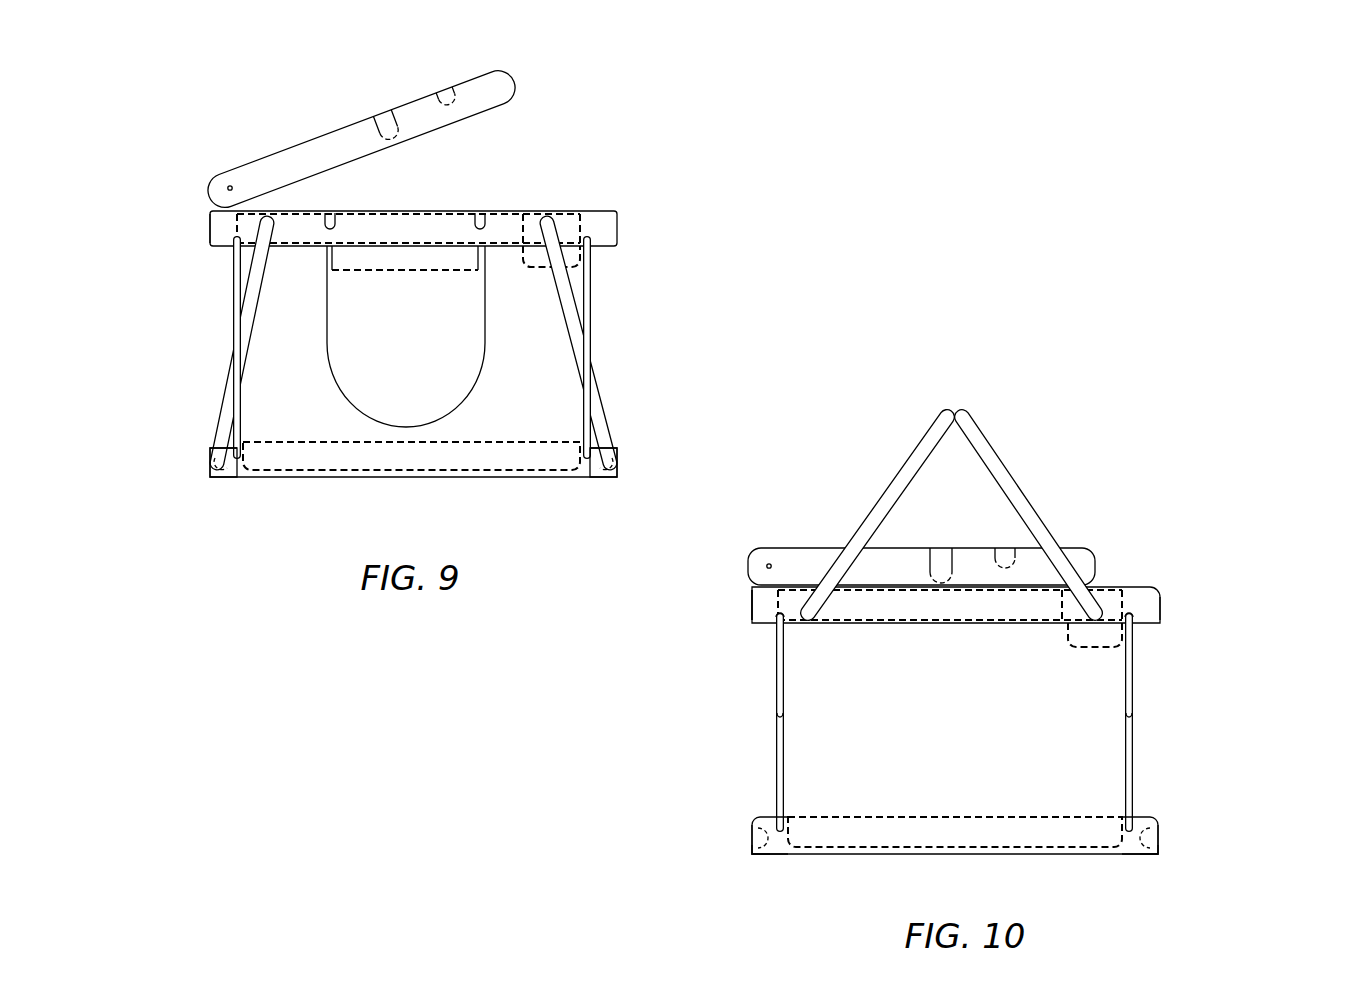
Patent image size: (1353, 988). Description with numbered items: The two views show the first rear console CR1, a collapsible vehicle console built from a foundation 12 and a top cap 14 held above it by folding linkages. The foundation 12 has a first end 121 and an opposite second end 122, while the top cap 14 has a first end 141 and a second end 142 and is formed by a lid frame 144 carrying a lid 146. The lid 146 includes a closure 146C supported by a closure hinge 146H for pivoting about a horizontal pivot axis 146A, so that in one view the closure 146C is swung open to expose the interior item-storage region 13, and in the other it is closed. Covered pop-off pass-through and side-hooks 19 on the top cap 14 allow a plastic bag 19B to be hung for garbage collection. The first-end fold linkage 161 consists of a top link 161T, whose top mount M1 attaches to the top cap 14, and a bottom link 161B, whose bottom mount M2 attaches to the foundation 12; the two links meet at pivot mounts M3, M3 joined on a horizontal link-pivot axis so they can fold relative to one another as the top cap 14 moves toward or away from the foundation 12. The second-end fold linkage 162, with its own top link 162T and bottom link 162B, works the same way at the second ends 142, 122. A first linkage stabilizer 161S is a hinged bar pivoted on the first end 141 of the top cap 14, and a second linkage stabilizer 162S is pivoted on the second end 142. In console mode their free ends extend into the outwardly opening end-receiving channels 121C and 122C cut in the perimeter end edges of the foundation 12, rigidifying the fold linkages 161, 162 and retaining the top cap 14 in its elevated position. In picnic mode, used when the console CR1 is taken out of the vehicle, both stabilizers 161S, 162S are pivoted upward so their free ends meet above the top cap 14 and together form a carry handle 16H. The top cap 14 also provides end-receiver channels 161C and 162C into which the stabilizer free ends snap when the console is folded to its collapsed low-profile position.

In FIG. 9, the foundation 12 is at (261, 481).
In FIG. 10, the foundation 12 is at (792, 862).
In FIG. 9, the interior item-storage region 13 is at (509, 341).
In FIG. 10, the interior item-storage region 13 is at (978, 714).
In FIG. 9, the top cap 14 is at (194, 195).
In FIG. 10, the top cap 14 is at (737, 570).
In FIG. 9, the covered pop-off pass-through and side-hooks 19 is at (334, 204).
In FIG. 9, the plastic bag 19B is at (424, 381).
In FIG. 10, the first end of foundation 121 is at (781, 825).
In FIG. 9, the end-receiving channel 121C is at (219, 478).
In FIG. 10, the end-receiving channel 121C is at (766, 845).
In FIG. 10, the second end of foundation 122 is at (1166, 830).
In FIG. 9, the end-receiving channel 122C is at (606, 478).
In FIG. 10, the end-receiving channel 122C is at (1160, 846).
In FIG. 10, the first end of top cap 141 is at (751, 606).
In FIG. 10, the second end of top cap 142 is at (1161, 587).
In FIG. 9, the lid frame 144 is at (436, 203).
In FIG. 10, the lid frame 144 is at (968, 630).
In FIG. 9, the lid 146 is at (490, 62).
In FIG. 10, the lid 146 is at (913, 529).
In FIG. 9, the horizontal pivot axis 146A is at (228, 186).
In FIG. 10, the horizontal pivot axis 146A is at (768, 563).
In FIG. 9, the closure 146C is at (313, 130).
In FIG. 10, the closure 146C is at (817, 545).
In FIG. 9, the closure hinge 146H is at (203, 210).
In FIG. 10, the closure hinge 146H is at (742, 588).
In FIG. 10, the carry handle 16H is at (1078, 442).
In FIG. 9, the first-end fold linkage 161 is at (129, 331).
In FIG. 10, the first-end fold linkage 161 is at (661, 716).
In FIG. 9, the top link 161T is at (234, 290).
In FIG. 10, the top link 161T is at (779, 680).
In FIG. 9, the bottom link 161B is at (236, 438).
In FIG. 10, the bottom link 161B is at (779, 780).
In FIG. 9, the first linkage stabilizer 161S is at (240, 350).
In FIG. 10, the first linkage stabilizer 161S is at (870, 498).
In FIG. 10, the end-receiver channel 161C is at (1003, 549).
In FIG. 9, the second-end fold linkage 162 is at (703, 276).
In FIG. 10, the second-end fold linkage 162 is at (1247, 707).
In FIG. 9, the top link 162T is at (591, 248).
In FIG. 10, the top link 162T is at (1131, 668).
In FIG. 9, the bottom link 162B is at (591, 345).
In FIG. 10, the bottom link 162B is at (1131, 775).
In FIG. 9, the second linkage stabilizer 162S is at (580, 352).
In FIG. 10, the second linkage stabilizer 162S is at (1022, 494).
In FIG. 10, the end-receiver channel 162C is at (941, 548).
In FIG. 9, the first rear console CR1 is at (570, 142).
In FIG. 10, the first rear console CR1 is at (1150, 537).
In FIG. 10, the top mount M1 is at (779, 620).
In FIG. 10, the bottom mount M2 is at (770, 850).
In FIG. 10, the pivot mount M3 is at (782, 717).